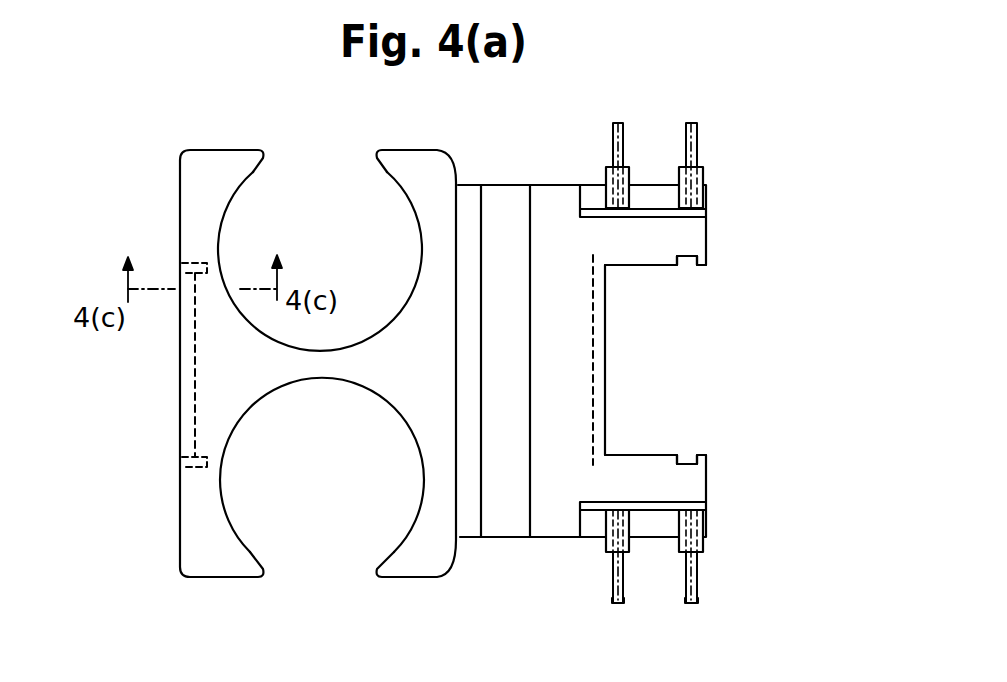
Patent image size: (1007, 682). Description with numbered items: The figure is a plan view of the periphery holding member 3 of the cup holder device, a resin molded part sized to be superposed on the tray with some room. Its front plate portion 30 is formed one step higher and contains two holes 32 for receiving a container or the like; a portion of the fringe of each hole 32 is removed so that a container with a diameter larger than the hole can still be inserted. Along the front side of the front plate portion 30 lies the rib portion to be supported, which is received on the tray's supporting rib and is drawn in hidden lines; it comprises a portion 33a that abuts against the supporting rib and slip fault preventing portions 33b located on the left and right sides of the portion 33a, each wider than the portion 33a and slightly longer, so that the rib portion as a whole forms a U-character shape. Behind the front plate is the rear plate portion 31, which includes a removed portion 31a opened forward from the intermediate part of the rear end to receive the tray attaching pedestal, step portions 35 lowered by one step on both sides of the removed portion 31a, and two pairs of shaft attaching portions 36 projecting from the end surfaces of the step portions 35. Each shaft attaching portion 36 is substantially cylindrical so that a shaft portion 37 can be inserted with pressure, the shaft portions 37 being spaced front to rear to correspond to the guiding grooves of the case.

The periphery holding member 3 is at (178, 190).
The front plate portion 30 is at (213, 167).
The rear plate portion 31 is at (552, 195).
The removed portion 31a is at (648, 267).
The hole 32 is at (408, 190).
The portion to abut against the supporting rib 33a is at (183, 372).
The slip fault preventing portion 33b is at (183, 465).
The step portion 35 is at (654, 195).
The shaft attaching portion 36 is at (702, 173).
The shaft portion 37 is at (615, 603).